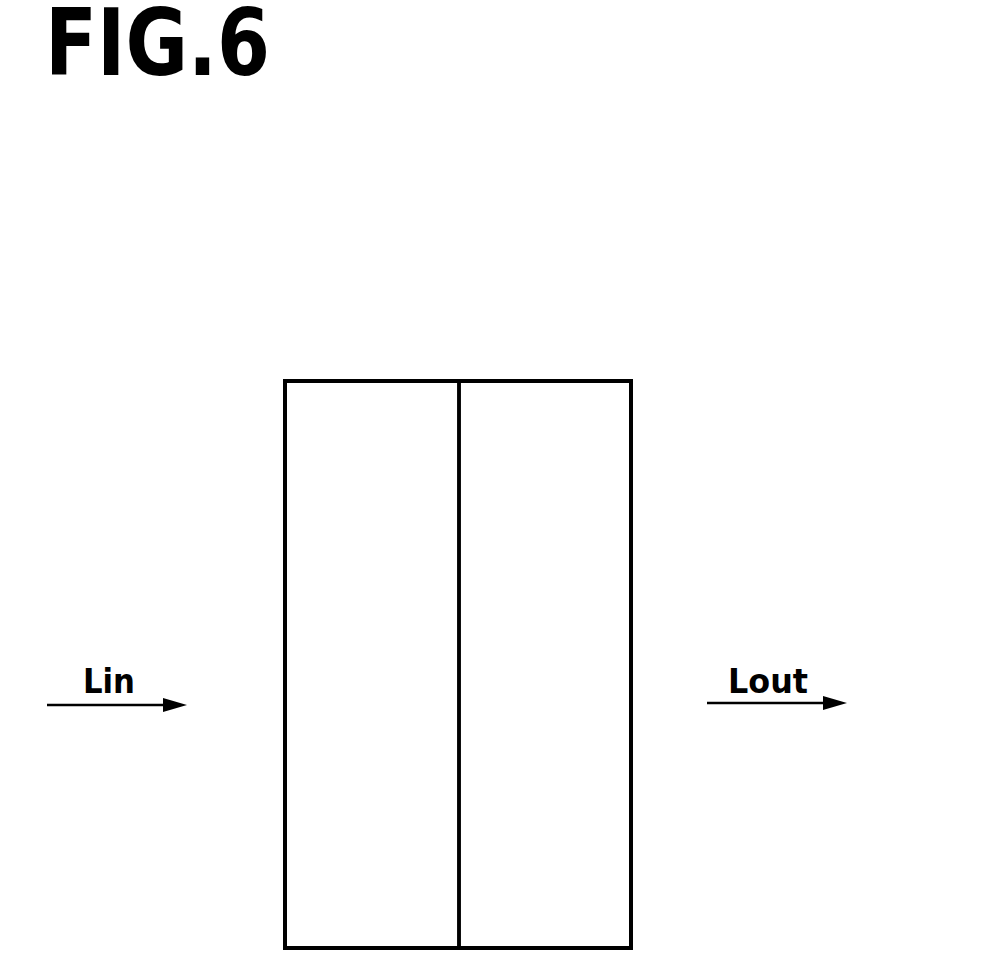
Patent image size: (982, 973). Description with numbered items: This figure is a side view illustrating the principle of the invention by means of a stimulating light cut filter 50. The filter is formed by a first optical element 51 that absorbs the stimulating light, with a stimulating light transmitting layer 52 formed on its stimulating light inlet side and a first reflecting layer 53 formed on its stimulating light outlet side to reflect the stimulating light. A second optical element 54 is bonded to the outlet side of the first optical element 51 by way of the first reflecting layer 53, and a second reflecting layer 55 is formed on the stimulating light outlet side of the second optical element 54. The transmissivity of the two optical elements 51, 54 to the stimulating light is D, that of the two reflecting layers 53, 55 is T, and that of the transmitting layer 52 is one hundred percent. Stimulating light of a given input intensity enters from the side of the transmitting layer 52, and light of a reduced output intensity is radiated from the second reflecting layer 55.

The stimulating light cut filter 50 is at (742, 182).
The first optical element 51 is at (340, 392).
The stimulating light transmitting layer 52 is at (282, 483).
The first reflecting layer 53 is at (460, 437).
The second optical element 54 is at (589, 393).
The second reflecting layer 55 is at (633, 483).